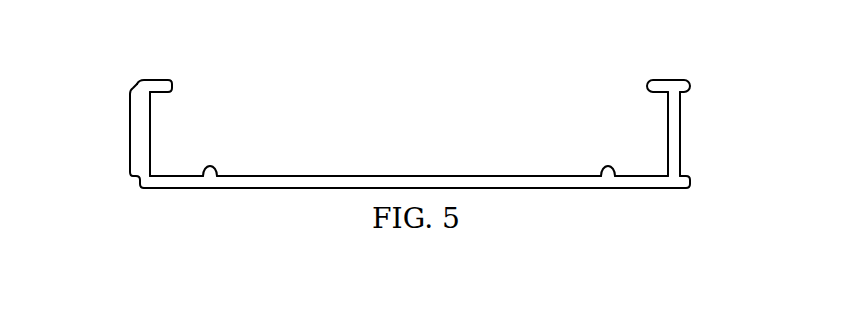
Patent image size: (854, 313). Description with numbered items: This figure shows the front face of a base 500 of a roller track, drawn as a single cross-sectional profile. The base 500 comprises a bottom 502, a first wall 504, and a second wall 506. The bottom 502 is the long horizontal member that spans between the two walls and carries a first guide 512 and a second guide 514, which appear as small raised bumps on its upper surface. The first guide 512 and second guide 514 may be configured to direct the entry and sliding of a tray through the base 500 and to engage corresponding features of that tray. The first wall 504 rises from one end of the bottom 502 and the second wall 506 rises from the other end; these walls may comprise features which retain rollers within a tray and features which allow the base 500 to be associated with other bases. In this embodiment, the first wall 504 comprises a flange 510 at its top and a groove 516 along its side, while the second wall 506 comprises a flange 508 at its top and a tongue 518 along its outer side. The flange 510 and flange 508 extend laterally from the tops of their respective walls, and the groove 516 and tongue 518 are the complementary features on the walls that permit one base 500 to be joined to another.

The base 500 is at (410, 158).
The bottom 502 is at (595, 189).
The first wall 504 is at (698, 117).
The second wall 506 is at (112, 115).
The flange 508 is at (153, 79).
The flange 510 is at (668, 79).
The first guide 512 is at (213, 164).
The second guide 514 is at (607, 165).
The groove 516 is at (681, 135).
The tongue 518 is at (129, 135).